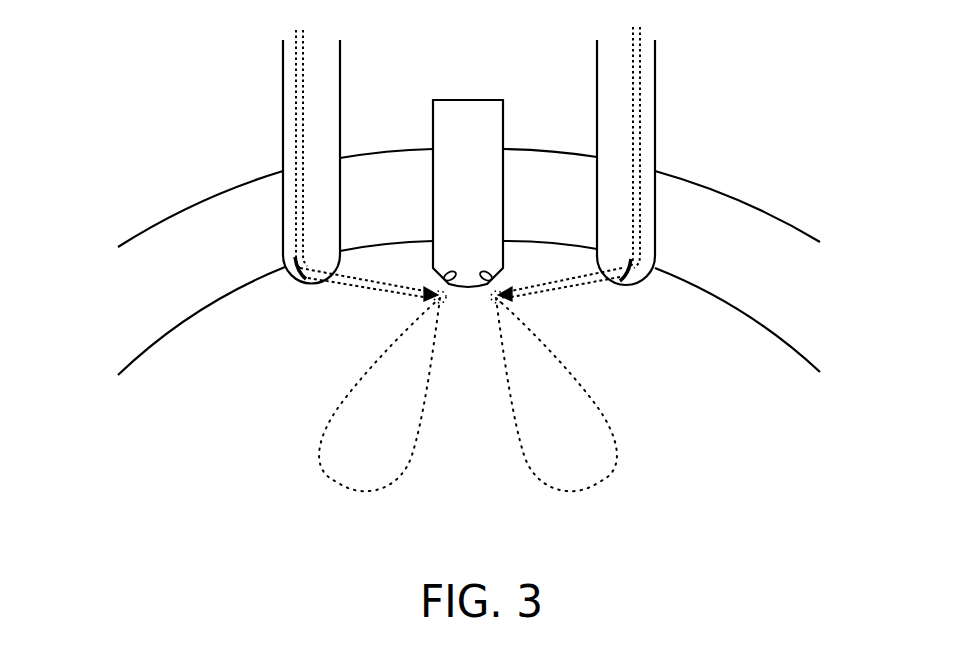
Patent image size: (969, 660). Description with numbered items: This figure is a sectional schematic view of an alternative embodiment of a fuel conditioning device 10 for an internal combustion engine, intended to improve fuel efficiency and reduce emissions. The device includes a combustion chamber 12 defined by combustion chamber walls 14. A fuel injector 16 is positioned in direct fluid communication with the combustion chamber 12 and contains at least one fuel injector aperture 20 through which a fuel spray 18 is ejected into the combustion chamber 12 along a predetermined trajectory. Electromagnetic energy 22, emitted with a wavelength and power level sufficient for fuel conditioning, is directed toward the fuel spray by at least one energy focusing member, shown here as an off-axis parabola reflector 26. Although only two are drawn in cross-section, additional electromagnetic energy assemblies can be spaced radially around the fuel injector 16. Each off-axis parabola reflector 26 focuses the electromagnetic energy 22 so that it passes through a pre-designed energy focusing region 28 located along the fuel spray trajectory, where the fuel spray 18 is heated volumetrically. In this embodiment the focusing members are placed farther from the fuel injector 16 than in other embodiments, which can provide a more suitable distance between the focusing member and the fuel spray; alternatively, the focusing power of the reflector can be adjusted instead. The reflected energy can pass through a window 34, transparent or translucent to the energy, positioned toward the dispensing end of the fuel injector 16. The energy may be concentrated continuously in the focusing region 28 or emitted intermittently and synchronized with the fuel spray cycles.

The fuel conditioning device 10 is at (757, 103).
The combustion chamber 12 is at (175, 417).
The combustion chamber walls 14 is at (237, 210).
The fuel injector 16 is at (483, 120).
The fuel spray 18 is at (508, 437).
The fuel injector aperture 20 is at (483, 263).
The electromagnetic energy 22 is at (634, 66).
The off-axis parabola reflector 26 is at (292, 287).
The energy focusing region 28 is at (488, 305).
The window 34 is at (313, 290).